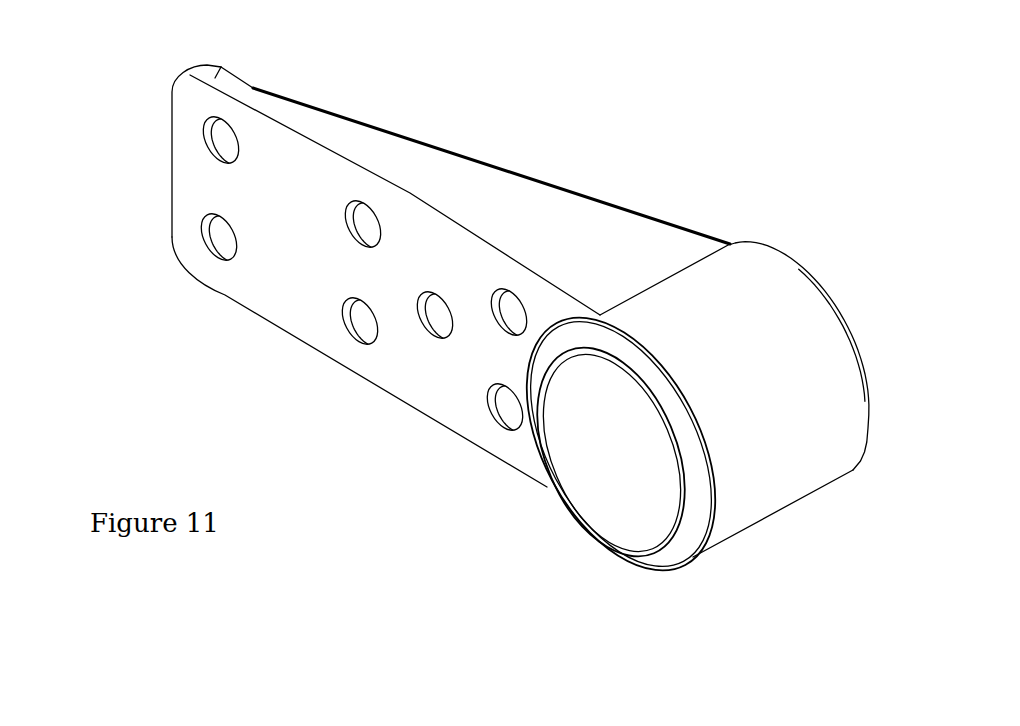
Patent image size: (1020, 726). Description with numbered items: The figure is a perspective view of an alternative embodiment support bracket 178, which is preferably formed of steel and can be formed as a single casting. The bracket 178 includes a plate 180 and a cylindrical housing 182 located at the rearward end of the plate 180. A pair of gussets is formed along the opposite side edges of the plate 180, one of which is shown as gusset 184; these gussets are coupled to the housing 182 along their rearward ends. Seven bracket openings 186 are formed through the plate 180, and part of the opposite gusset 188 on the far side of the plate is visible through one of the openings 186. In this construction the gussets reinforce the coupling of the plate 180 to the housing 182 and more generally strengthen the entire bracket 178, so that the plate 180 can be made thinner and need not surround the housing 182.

The bracket 178 is at (640, 139).
The plate 180 is at (183, 197).
The cylindrical housing 182 is at (772, 283).
The gusset 184 is at (452, 160).
The bracket openings 186 is at (215, 140).
The opposite gusset 188 is at (372, 327).